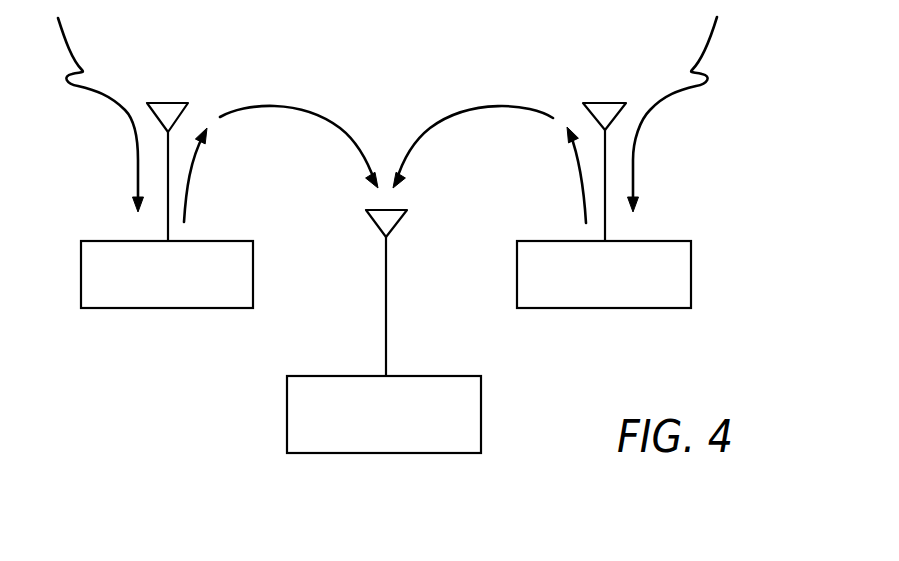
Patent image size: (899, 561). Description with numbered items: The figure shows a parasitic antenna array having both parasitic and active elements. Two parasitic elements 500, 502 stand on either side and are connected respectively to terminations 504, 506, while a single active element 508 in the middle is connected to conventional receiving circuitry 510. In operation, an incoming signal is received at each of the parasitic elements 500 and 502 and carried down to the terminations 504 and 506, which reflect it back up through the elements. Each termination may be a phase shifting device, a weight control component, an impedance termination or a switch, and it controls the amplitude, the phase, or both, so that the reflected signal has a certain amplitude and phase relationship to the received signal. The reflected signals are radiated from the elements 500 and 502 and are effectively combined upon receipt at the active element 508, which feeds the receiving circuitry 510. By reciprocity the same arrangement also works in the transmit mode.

The parasitic element 500 is at (170, 101).
The parasitic element 502 is at (602, 101).
The termination 504 is at (150, 309).
The termination 506 is at (618, 309).
The active element 508 is at (399, 222).
The receiving circuitry 510 is at (287, 422).